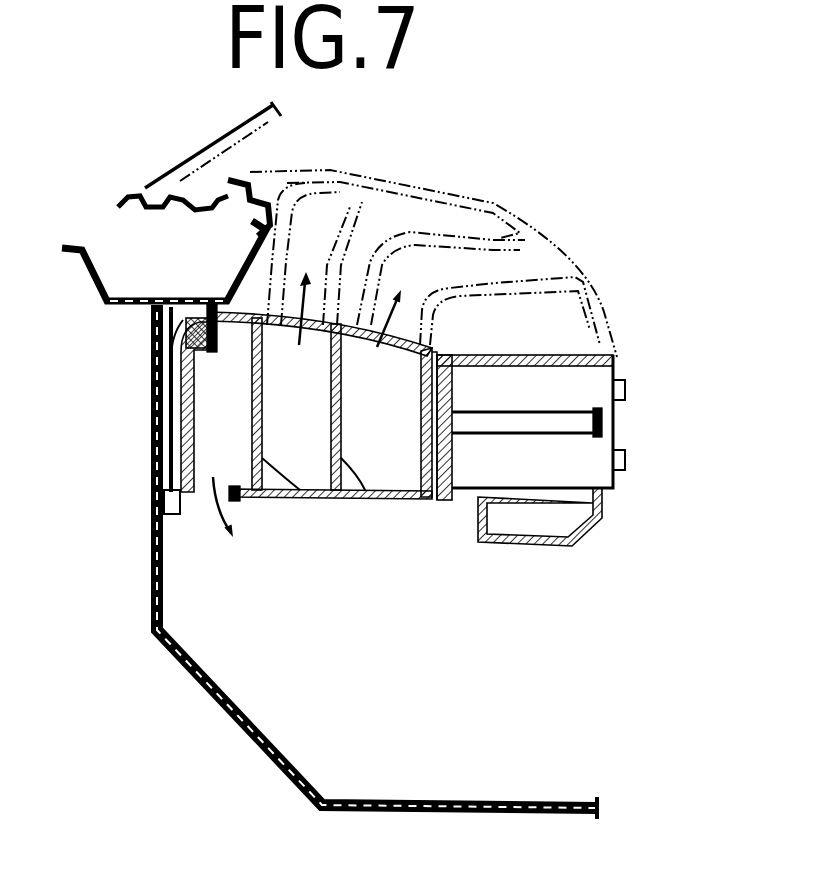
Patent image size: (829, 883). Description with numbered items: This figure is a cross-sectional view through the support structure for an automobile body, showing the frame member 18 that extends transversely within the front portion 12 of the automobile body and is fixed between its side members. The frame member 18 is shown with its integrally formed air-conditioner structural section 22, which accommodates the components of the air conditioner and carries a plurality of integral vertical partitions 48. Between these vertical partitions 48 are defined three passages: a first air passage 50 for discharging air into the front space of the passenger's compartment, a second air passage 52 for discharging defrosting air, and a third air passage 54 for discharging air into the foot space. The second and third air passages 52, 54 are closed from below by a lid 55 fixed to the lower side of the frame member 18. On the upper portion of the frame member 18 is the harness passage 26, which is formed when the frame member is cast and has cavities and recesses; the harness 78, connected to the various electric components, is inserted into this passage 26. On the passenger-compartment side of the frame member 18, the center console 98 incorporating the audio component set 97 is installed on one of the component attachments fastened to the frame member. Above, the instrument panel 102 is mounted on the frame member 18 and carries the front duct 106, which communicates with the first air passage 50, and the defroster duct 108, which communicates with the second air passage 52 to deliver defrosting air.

The front portion of automobile body 12 is at (200, 692).
The frame member 18 is at (150, 455).
The air-conditioner structural section 22 is at (193, 512).
The harness passage 26 is at (165, 322).
The vertical partitions 48 is at (303, 498).
The first air passage 50 is at (394, 424).
The second air passage 52 is at (314, 424).
The third air passage 54 is at (241, 424).
The lid 55 is at (283, 498).
The harness 78 is at (152, 402).
The audio component set 97 is at (598, 452).
The center console 98 is at (600, 523).
The instrument panel 102 is at (500, 198).
The front duct 106 is at (447, 308).
The defroster duct 108 is at (358, 197).